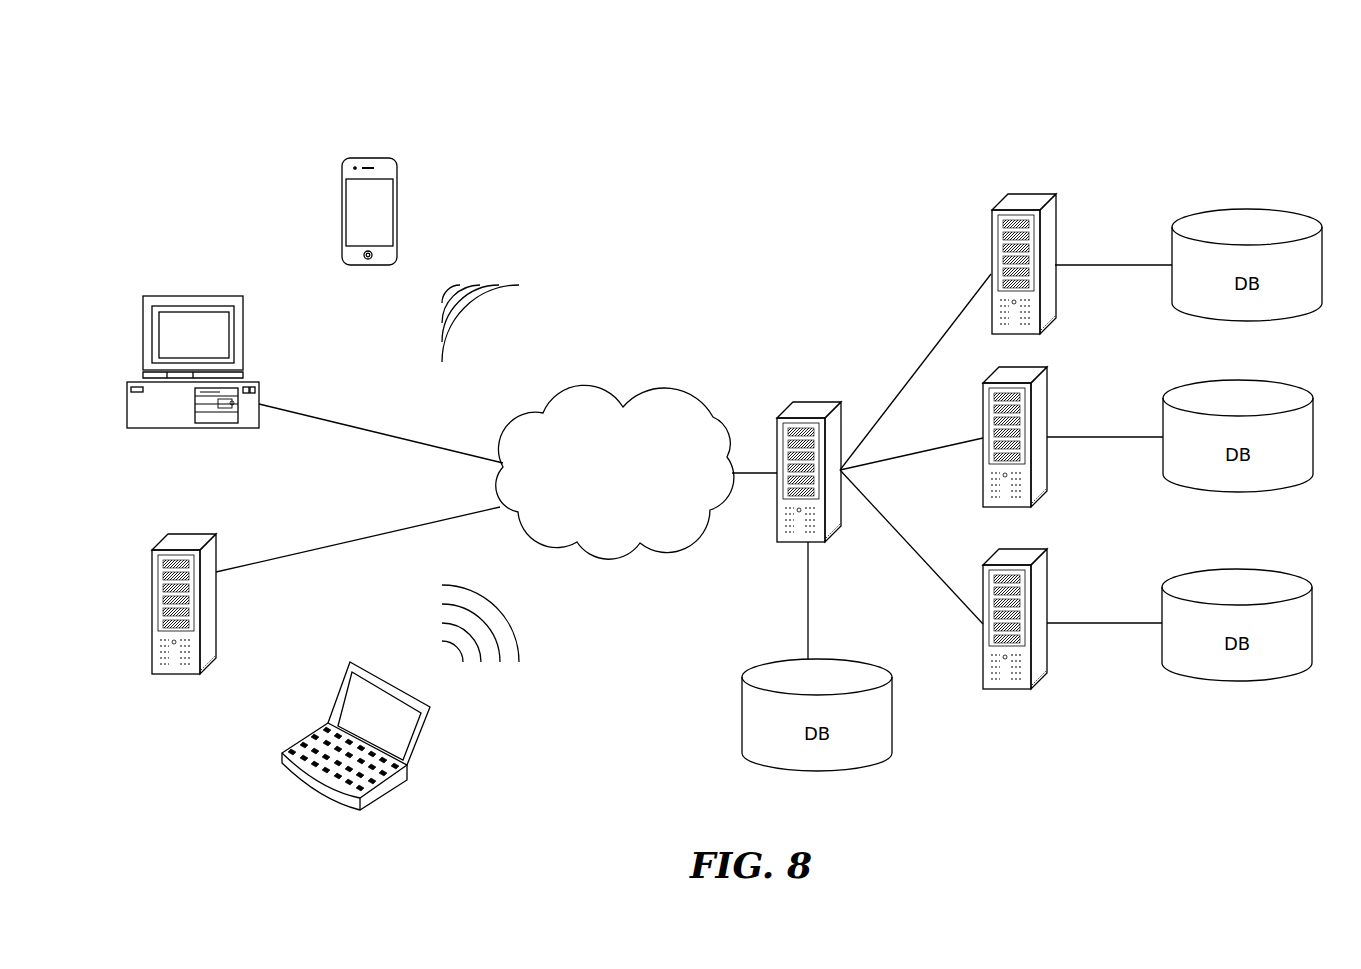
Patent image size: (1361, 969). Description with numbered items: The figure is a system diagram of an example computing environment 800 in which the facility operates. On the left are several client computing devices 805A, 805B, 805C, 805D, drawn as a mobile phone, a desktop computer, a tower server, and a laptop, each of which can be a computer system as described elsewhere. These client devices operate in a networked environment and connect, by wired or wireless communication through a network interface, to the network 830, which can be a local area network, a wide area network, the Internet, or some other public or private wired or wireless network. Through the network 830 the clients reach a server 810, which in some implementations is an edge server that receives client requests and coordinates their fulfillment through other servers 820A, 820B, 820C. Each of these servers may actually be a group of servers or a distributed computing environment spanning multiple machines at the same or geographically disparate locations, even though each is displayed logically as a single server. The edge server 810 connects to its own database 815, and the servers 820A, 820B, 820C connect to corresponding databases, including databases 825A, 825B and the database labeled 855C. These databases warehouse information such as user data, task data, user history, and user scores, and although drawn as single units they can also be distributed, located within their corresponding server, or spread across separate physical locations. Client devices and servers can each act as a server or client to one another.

The environment 800 is at (214, 108).
The client computing device 805A is at (383, 157).
The client computing device 805B is at (233, 295).
The client computing device 805C is at (205, 535).
The client computing device 805D is at (430, 742).
The network 830 is at (670, 393).
The server 810 is at (818, 402).
The database 815 is at (868, 660).
The server 820A is at (1053, 193).
The server 820B is at (1047, 365).
The server 820C is at (1047, 552).
The database 825A is at (1243, 208).
The database 825B is at (1233, 380).
The database 855C is at (1233, 568).